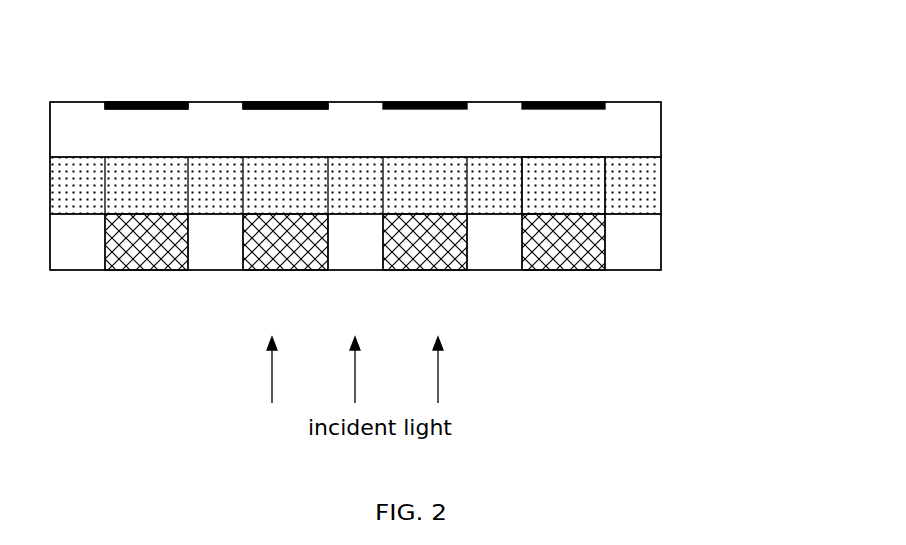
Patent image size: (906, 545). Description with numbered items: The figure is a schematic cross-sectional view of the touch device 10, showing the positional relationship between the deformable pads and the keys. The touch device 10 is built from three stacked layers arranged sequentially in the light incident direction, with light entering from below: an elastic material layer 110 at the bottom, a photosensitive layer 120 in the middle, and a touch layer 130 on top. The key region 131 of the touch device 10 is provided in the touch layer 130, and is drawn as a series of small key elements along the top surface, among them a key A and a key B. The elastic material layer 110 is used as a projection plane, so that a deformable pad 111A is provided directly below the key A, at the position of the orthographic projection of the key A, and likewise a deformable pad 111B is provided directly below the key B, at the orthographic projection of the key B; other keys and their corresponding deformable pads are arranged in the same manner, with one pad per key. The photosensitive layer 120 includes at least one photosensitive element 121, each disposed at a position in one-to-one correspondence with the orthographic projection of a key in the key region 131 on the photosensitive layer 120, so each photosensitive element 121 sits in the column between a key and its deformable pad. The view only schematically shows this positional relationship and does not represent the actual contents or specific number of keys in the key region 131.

The touch device 10 is at (550, 82).
The touch layer 130 is at (633, 125).
The key region 131 is at (605, 102).
The photosensitive layer 120 is at (633, 180).
The photosensitive element 121 is at (548, 175).
The elastic material layer 110 is at (655, 232).
The deformable pad 111A is at (120, 255).
The deformable pad 111B is at (273, 255).
The key A is at (120, 102).
The key B is at (275, 102).